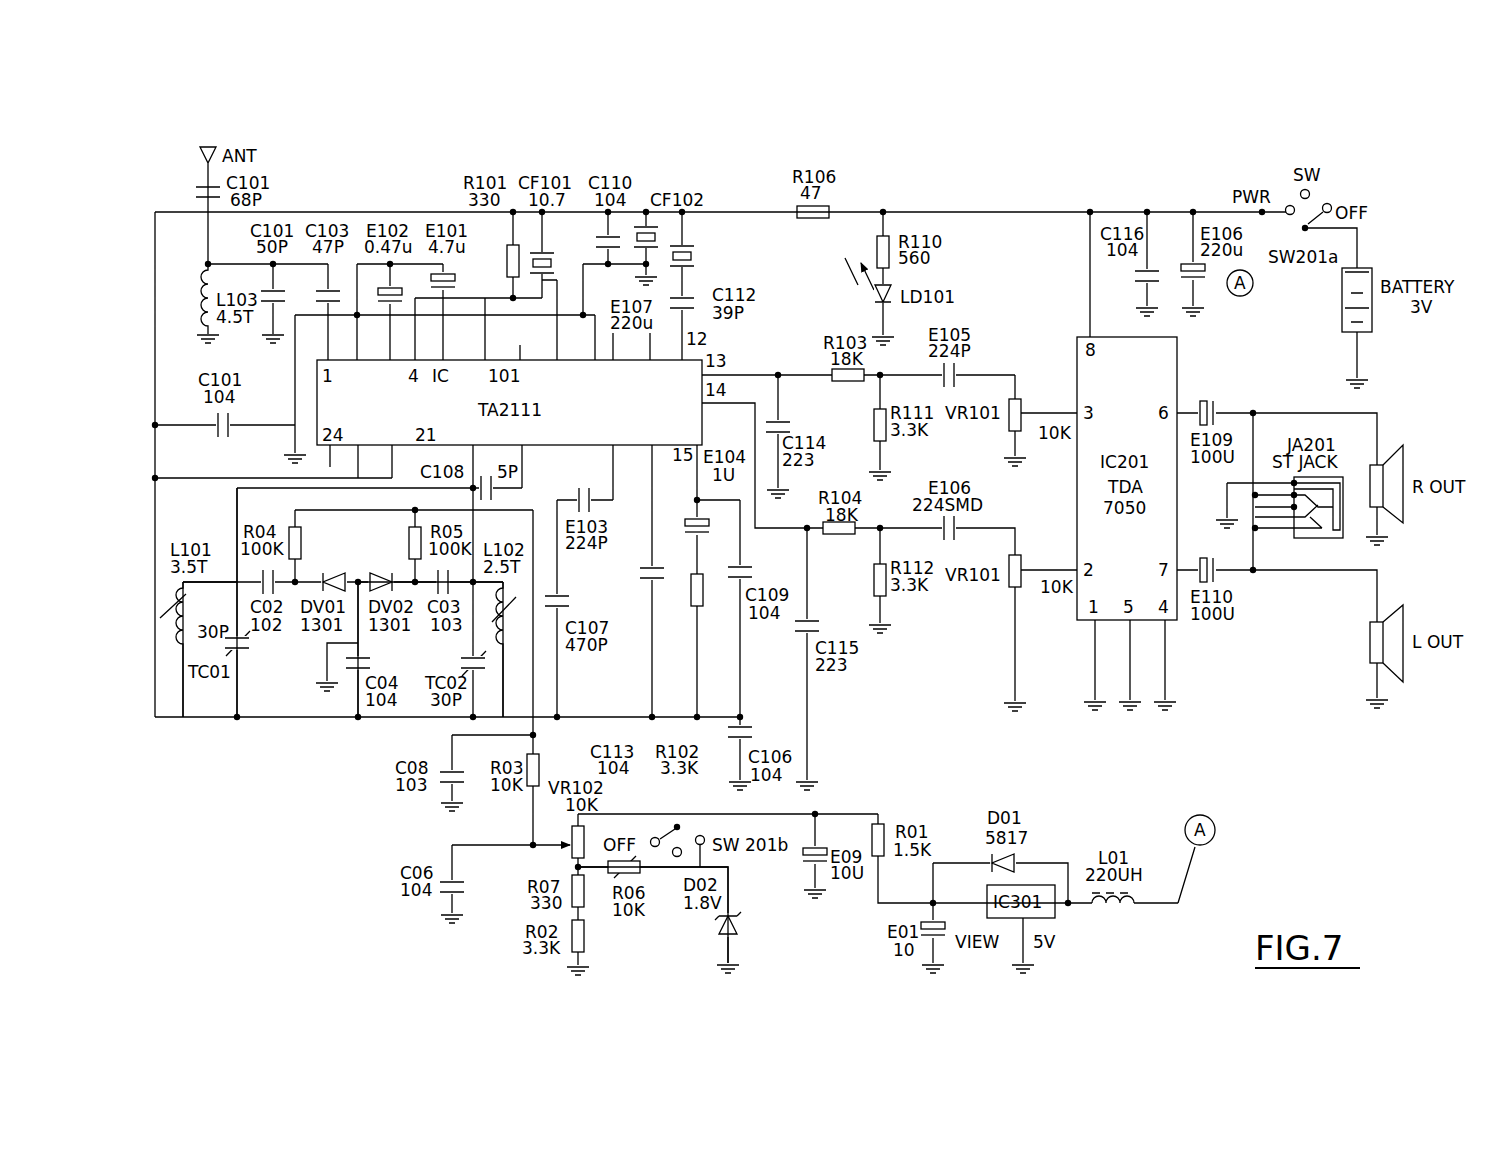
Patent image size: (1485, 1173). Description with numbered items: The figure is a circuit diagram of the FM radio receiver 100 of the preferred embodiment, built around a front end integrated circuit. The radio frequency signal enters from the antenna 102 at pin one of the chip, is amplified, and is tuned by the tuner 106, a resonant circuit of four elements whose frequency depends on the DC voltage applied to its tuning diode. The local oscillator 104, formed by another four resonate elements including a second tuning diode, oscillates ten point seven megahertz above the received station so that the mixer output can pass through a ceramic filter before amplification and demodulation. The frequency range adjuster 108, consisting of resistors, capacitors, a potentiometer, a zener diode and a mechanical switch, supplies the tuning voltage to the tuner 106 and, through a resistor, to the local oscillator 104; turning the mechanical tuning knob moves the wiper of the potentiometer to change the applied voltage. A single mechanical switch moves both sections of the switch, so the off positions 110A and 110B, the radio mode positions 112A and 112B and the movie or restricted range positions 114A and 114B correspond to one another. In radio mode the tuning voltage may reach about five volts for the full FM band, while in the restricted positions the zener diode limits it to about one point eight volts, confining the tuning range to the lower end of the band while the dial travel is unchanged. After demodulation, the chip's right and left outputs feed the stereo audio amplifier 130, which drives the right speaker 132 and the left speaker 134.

The receiver 100 is at (880, 187).
The antenna 102 is at (217, 152).
The local oscillator 104 is at (397, 737).
The tuner 106 is at (247, 732).
The frequency range adjuster 108 is at (772, 912).
The off position 110A is at (1330, 214).
The off position 110B is at (653, 827).
The radio mode position 112A is at (1312, 188).
The radio mode position 112B is at (677, 857).
The movie mode position 114A is at (1290, 200).
The movie mode position 114B is at (705, 848).
The stereo audio amplifier 130 is at (1198, 663).
The right speaker 132 is at (1398, 453).
The left speaker 134 is at (1405, 613).